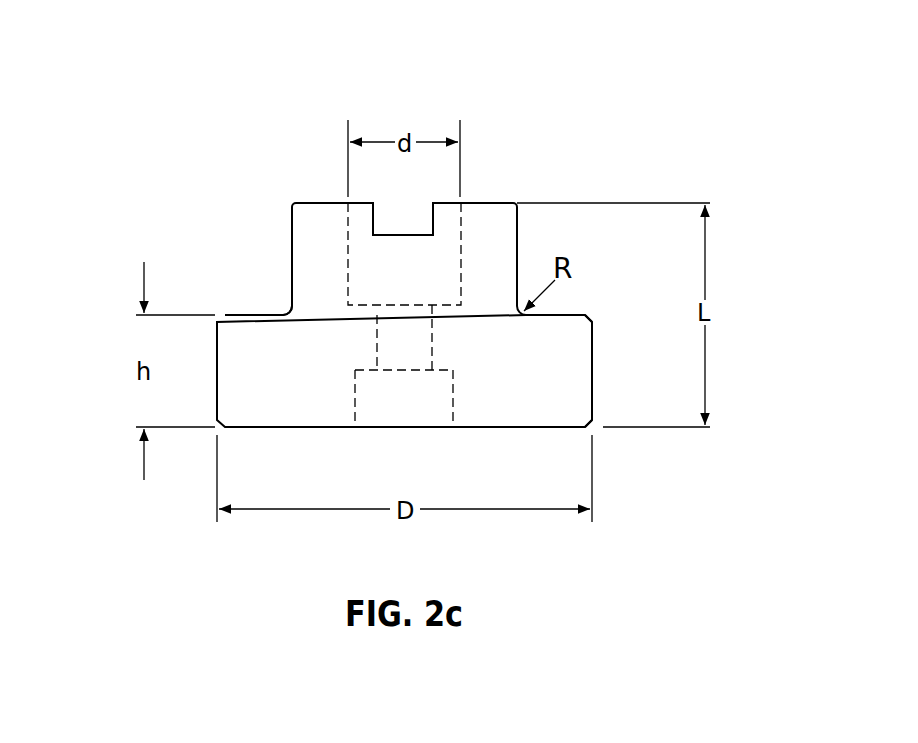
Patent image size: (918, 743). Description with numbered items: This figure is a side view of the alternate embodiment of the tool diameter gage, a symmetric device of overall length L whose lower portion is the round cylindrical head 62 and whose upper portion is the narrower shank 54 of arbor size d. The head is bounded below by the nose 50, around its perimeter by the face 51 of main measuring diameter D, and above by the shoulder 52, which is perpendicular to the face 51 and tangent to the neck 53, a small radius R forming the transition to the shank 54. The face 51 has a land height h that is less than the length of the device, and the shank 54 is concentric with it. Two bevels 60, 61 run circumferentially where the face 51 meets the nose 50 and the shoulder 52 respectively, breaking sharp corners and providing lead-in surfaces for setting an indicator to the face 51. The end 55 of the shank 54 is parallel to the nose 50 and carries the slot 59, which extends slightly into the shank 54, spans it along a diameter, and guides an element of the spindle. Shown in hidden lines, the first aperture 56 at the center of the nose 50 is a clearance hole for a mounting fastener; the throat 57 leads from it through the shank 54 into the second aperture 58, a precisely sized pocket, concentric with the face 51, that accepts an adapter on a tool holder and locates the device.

The nose 50 is at (303, 427).
The face 51 is at (215, 367).
The shoulder 52 is at (253, 313).
The neck 53 is at (283, 313).
The shank 54 is at (292, 258).
The end 55 is at (483, 203).
The first aperture 56 is at (405, 410).
The throat 57 is at (403, 340).
The second aperture 58 is at (403, 275).
The slot 59 is at (428, 210).
The bevel 60 is at (592, 427).
The bevel 61 is at (592, 315).
The head 62 is at (532, 235).